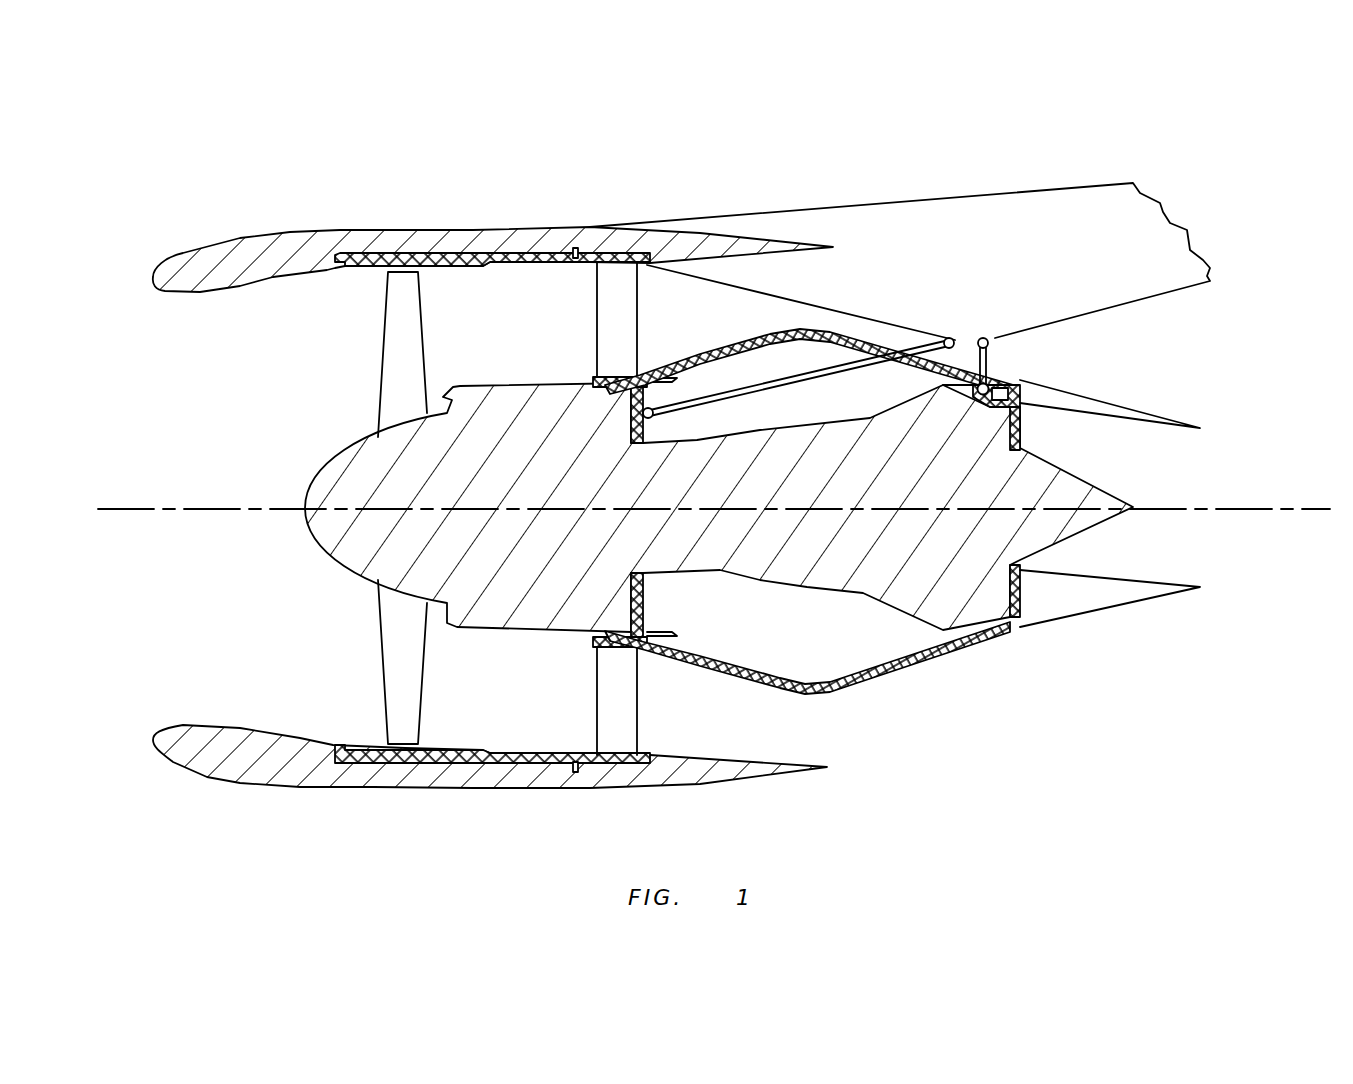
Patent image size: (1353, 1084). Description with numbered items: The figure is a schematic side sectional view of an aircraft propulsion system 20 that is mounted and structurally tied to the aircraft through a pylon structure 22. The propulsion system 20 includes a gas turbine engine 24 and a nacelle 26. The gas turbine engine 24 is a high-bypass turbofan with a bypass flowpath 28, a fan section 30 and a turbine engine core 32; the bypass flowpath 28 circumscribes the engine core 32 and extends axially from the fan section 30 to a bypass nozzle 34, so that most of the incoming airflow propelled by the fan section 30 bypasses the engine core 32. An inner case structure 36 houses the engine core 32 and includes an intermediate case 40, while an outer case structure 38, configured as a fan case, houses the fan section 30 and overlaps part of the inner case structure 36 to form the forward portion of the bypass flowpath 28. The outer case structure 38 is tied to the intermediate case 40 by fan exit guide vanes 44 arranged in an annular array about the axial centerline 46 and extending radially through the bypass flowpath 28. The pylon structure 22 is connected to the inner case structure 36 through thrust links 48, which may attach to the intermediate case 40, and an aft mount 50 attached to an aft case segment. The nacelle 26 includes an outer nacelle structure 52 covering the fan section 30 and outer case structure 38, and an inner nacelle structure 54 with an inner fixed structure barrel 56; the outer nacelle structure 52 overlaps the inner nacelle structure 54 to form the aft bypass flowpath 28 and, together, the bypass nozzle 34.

The aircraft propulsion system 20 is at (180, 155).
The pylon structure 22 is at (976, 196).
The gas turbine engine 24 is at (345, 579).
The nacelle 26 is at (290, 800).
The bypass flowpath 28 is at (551, 328).
The fan section 30 is at (355, 362).
The turbine engine core 32 is at (865, 582).
The bypass nozzle 34 is at (830, 738).
The inner case structure 36 is at (570, 636).
The outer case structure 38 is at (405, 248).
The intermediate case 40 is at (646, 603).
The fan exit guide vanes 44 is at (638, 304).
The axial centerline 46 is at (1243, 509).
The thrust links 48 is at (757, 391).
The aft mount 50 is at (993, 385).
The outer nacelle structure 52 is at (493, 218).
The inner nacelle structure 54 is at (982, 660).
The inner fixed structure barrel 56 is at (1003, 642).